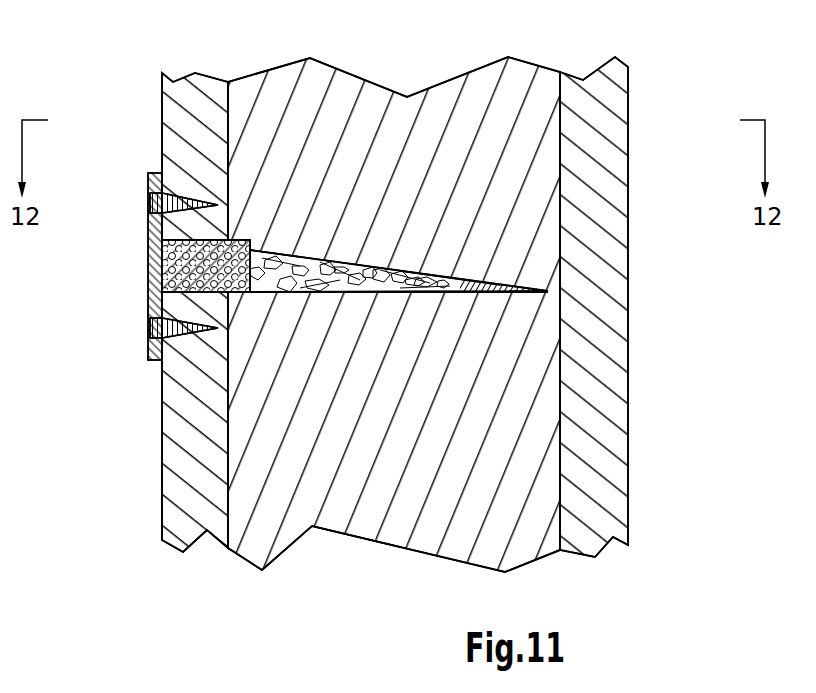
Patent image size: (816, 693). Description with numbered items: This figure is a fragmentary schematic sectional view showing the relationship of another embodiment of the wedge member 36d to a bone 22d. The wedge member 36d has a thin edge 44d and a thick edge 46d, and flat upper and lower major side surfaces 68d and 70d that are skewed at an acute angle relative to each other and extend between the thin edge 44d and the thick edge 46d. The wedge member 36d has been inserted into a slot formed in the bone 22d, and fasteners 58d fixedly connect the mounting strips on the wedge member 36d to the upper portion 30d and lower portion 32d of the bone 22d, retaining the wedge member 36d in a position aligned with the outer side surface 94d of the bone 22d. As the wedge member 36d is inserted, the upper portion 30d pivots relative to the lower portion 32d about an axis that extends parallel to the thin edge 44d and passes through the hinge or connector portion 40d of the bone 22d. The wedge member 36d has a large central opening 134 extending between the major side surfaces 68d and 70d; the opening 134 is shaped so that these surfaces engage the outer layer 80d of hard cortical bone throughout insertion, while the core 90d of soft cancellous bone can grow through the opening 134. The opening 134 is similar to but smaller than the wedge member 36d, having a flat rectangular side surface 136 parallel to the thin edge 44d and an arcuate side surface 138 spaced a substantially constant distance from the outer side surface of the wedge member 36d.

The bone 22d is at (648, 84).
The upper portion of the bone 30d is at (276, 110).
The lower portion of the bone 32d is at (182, 461).
The wedge member 36d is at (355, 207).
The hinge or connector portion 40d is at (560, 294).
The thin edge 44d is at (551, 292).
The thick edge 46d is at (148, 278).
The fasteners 58d is at (152, 226).
The upper major side surface 68d is at (442, 262).
The lower major side surface 70d is at (395, 293).
The outer layer of hard cortical bone 80d is at (193, 513).
The core of soft cancellous bone 90d is at (350, 495).
The outer side surface of the bone 94d is at (162, 513).
The central opening 134 is at (312, 258).
The flat rectangular side surface 136 is at (463, 292).
The arcuate side surface 138 is at (270, 249).